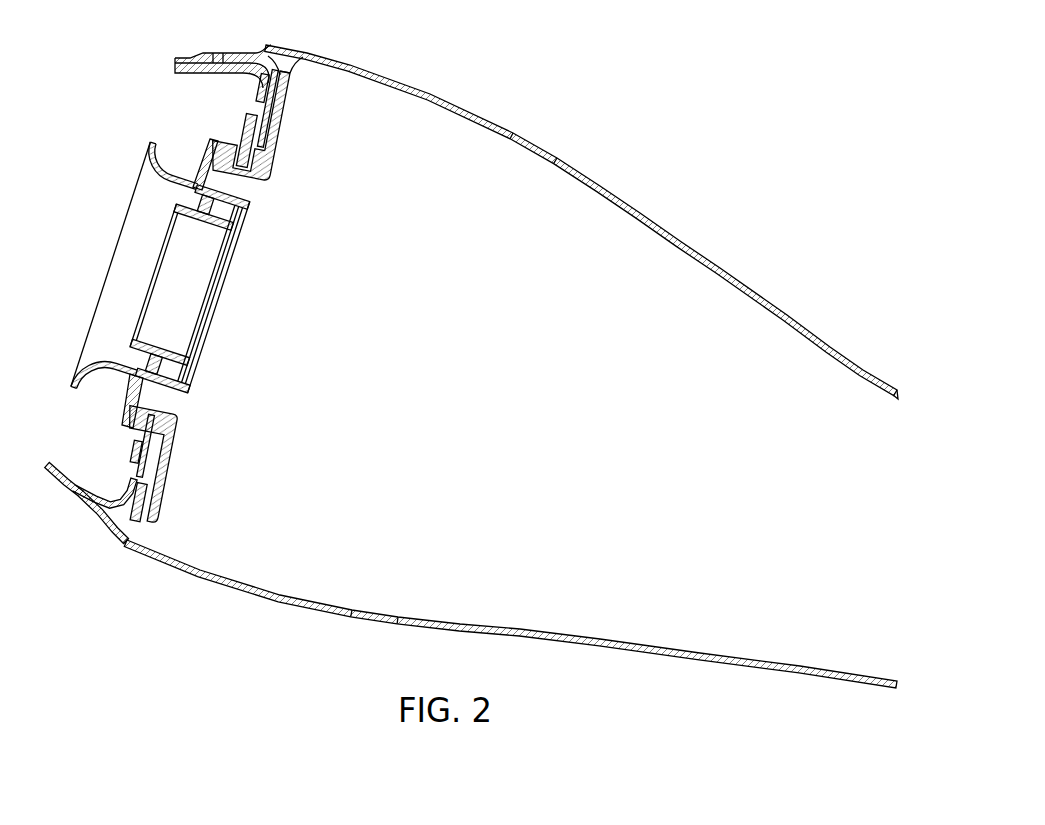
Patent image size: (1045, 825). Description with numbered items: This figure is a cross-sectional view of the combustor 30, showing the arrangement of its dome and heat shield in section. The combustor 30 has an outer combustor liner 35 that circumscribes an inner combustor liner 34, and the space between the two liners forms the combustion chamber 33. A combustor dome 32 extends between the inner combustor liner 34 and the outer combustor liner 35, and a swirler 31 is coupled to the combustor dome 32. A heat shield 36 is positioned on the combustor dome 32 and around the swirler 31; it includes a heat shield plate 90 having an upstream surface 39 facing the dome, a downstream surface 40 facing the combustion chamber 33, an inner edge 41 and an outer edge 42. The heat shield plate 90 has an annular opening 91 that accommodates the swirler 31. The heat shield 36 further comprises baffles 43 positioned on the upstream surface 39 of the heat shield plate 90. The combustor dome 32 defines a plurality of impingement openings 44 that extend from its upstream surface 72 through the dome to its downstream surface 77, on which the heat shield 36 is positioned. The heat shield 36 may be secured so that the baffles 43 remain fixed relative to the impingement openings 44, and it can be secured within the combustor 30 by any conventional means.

The combustor 30 is at (724, 105).
The swirler 31 is at (170, 283).
The combustor dome 32 is at (183, 75).
The combustion chamber 33 is at (464, 409).
The inner combustor liner 34 is at (614, 196).
The outer combustor liner 35 is at (461, 631).
The heat shield 36 is at (283, 121).
The upstream surface 39 is at (148, 458).
The downstream surface 40 is at (182, 440).
The inner edge 41 is at (291, 64).
The outer edge 42 is at (126, 541).
The baffle 43 is at (260, 86).
The impingement opening 44 is at (277, 107).
The upstream surface 72 is at (243, 133).
The downstream surface 77 is at (280, 150).
The heat shield plate 90 is at (272, 176).
The annular opening 91 is at (256, 180).